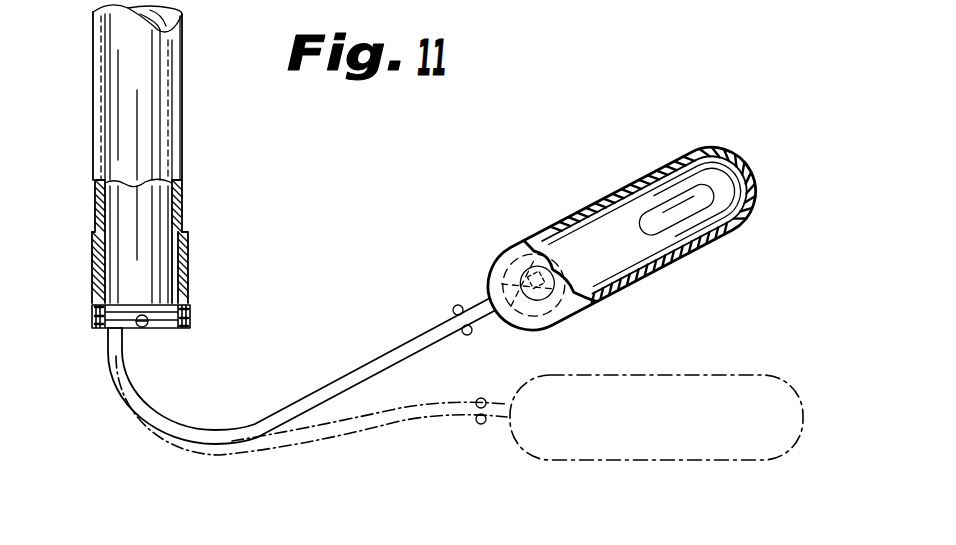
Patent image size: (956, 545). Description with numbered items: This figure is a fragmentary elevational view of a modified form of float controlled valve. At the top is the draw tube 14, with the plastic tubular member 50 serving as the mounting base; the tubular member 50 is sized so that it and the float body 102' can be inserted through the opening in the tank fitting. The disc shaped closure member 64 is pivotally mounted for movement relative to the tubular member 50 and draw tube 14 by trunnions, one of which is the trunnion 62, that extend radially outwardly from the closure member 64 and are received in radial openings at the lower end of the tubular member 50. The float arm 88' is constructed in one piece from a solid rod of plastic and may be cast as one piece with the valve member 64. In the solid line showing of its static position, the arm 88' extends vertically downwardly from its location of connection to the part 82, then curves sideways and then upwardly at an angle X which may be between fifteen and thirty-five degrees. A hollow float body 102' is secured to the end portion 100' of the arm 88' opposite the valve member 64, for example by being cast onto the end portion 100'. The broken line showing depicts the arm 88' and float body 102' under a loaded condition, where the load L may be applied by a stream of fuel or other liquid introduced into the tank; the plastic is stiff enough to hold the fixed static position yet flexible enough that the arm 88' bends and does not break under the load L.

The draw tube 14 is at (148, 141).
The tubular member 50 is at (188, 273).
The trunnion 62 is at (142, 328).
The closure member 64 is at (101, 333).
The part 82 is at (102, 330).
The float arm 88' is at (307, 376).
The end portion 100' is at (541, 249).
The float body 102' is at (622, 227).
The load L is at (750, 374).
The angle X is at (412, 307).